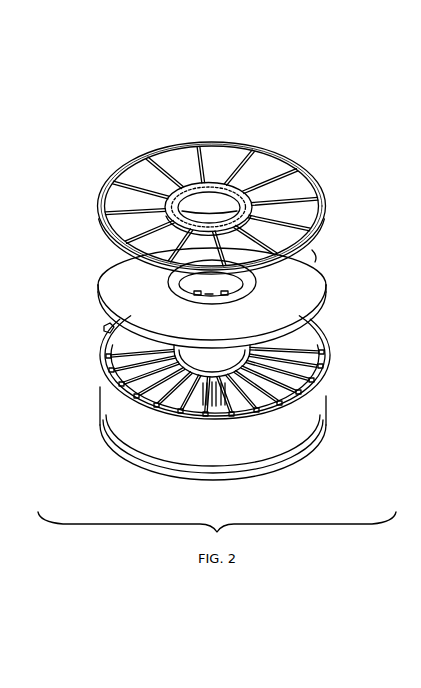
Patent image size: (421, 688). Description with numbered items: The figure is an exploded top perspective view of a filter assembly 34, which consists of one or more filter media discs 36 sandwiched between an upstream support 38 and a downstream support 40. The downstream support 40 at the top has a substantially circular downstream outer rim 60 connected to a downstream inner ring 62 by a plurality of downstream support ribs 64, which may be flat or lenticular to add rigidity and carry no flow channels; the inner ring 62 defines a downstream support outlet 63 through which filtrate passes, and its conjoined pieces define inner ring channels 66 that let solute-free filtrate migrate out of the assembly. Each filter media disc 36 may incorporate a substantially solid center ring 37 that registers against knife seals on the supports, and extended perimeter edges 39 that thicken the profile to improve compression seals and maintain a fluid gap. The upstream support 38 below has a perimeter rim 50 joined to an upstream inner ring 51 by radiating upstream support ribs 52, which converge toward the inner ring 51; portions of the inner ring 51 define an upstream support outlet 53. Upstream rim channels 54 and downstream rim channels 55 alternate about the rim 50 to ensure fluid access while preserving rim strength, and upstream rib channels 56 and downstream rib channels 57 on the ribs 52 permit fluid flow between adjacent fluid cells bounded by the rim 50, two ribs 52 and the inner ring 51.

The filter assembly 34 is at (291, 126).
The downstream support 40 is at (195, 194).
The downstream outer rim 60 is at (172, 151).
The downstream support ribs 64 is at (284, 202).
The downstream support outlet 63 is at (217, 200).
The downstream inner ring 62 is at (204, 186).
The inner ring channels 66 is at (198, 190).
The filter media discs 36 is at (243, 281).
The center ring 37 is at (256, 290).
The extended perimeter edges 39 is at (318, 253).
The upstream support ribs 52 is at (201, 402).
The upstream rib channels 56 is at (124, 390).
The upstream support outlet 53 is at (212, 361).
The upstream rim channels 54 is at (203, 423).
The downstream rim channels 55 is at (290, 418).
The upstream inner ring 51 is at (215, 424).
The perimeter rim 50 is at (228, 423).
The downstream rib channels 57 is at (108, 323).
The upstream support 38 is at (148, 424).